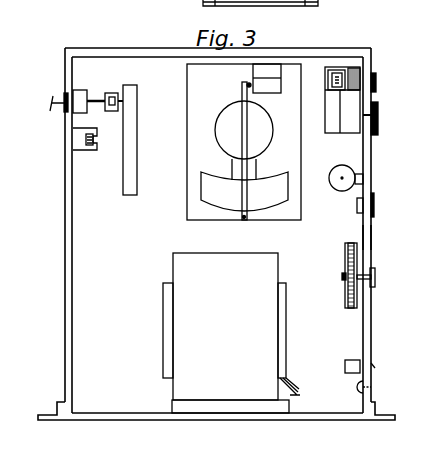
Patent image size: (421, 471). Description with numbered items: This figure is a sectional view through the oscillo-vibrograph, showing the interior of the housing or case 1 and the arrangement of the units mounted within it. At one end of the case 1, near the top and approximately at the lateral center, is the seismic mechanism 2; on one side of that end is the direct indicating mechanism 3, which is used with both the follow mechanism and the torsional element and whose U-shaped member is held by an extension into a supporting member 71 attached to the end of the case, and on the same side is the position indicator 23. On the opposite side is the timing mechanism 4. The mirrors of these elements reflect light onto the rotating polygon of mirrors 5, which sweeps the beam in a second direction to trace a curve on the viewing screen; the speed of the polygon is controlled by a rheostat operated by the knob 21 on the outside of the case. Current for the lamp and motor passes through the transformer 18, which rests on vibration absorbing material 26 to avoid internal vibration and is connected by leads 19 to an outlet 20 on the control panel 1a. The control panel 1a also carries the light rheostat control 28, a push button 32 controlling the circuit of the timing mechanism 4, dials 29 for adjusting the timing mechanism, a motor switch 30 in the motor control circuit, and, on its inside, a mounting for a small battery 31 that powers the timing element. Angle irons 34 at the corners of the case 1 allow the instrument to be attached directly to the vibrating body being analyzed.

The housing 1 is at (68, 228).
The control panel 1a is at (368, 237).
The seismic mechanism 2 is at (236, 142).
The direct indicating mechanism 3 is at (100, 89).
The timing mechanism 4 is at (334, 128).
The polygon of mirrors 5 is at (242, 151).
The transformer 18 is at (224, 326).
The leads 19 is at (298, 396).
The outlet 20 is at (356, 388).
The knob 21 is at (366, 174).
The position indicator 23 is at (78, 150).
The vibration absorbing material 26 is at (166, 408).
The light rheostat control 28 is at (378, 284).
The dials 29 is at (380, 116).
The motor switch 30 is at (350, 361).
The battery 31 is at (353, 171).
The push button 32 is at (373, 207).
The angle irons 34 is at (378, 414).
The supporting member 71 is at (133, 128).